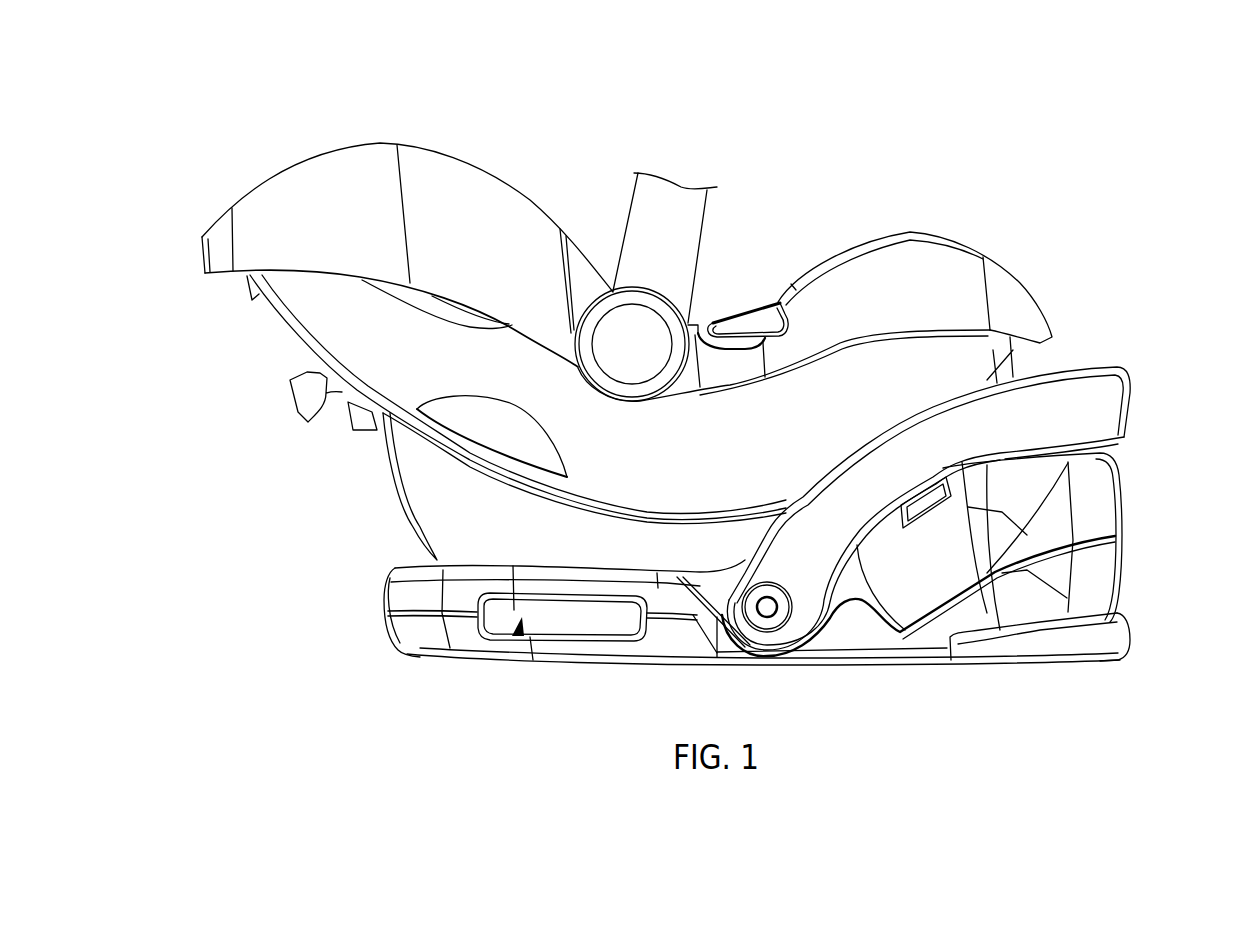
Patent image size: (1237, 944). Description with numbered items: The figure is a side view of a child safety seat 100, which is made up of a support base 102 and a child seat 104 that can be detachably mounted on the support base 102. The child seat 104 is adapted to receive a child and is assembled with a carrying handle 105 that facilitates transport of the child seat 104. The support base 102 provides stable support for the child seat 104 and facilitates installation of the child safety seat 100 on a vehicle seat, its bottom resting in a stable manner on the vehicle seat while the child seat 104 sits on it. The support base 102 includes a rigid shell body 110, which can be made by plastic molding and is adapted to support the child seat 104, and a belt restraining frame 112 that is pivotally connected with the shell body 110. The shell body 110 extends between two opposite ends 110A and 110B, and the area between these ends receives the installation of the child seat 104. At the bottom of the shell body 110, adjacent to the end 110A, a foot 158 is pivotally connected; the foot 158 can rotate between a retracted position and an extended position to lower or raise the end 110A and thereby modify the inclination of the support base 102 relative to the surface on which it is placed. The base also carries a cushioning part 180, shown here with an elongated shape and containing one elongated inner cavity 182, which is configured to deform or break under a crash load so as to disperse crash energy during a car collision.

The child safety seat 100 is at (1141, 46).
The support base 102 is at (1140, 452).
The child seat 104 is at (247, 172).
The carrying handle 105 is at (694, 235).
The shell body 110 is at (729, 641).
The end 110A is at (1142, 607).
The end 110B is at (314, 617).
The belt restraining frame 112 is at (1137, 353).
The foot 158 is at (1072, 641).
The cushioning part 180 is at (580, 642).
The inner cavity 182 is at (518, 637).